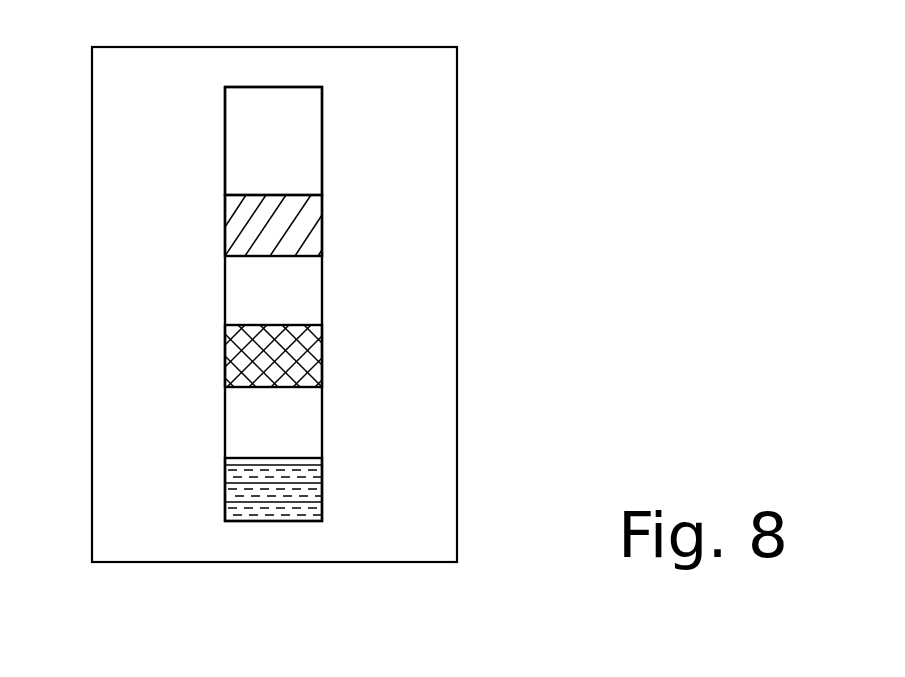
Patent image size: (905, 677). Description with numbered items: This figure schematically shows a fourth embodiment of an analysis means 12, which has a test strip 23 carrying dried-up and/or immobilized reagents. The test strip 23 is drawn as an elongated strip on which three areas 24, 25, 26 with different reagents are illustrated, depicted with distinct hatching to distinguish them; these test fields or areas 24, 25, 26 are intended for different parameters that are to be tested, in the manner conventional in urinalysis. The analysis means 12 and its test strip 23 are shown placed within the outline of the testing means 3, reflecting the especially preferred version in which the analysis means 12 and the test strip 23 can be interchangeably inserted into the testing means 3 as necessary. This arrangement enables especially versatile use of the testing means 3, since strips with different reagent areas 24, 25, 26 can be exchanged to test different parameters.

The testing means 3 is at (390, 157).
The analysis means 12 is at (175, 150).
The test strip 23 is at (340, 130).
The area 24 is at (292, 495).
The area 25 is at (295, 352).
The area 26 is at (305, 225).